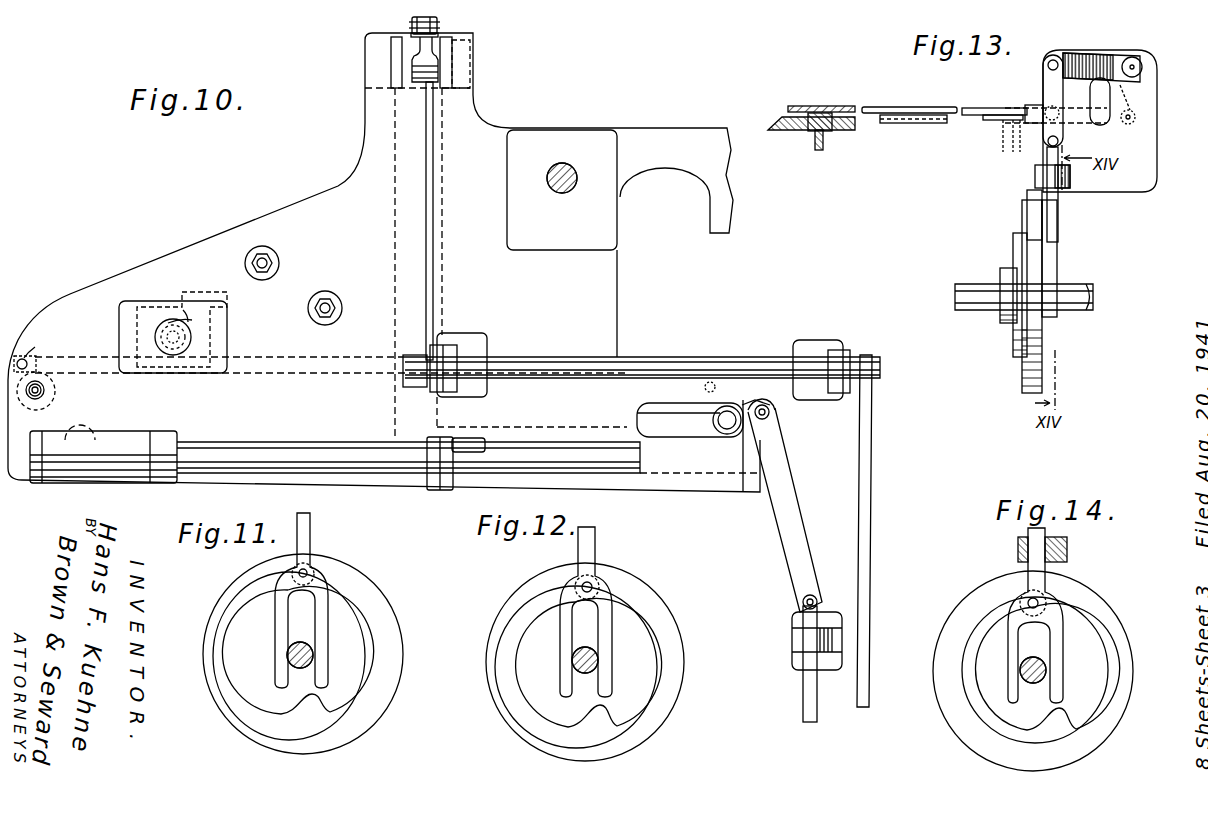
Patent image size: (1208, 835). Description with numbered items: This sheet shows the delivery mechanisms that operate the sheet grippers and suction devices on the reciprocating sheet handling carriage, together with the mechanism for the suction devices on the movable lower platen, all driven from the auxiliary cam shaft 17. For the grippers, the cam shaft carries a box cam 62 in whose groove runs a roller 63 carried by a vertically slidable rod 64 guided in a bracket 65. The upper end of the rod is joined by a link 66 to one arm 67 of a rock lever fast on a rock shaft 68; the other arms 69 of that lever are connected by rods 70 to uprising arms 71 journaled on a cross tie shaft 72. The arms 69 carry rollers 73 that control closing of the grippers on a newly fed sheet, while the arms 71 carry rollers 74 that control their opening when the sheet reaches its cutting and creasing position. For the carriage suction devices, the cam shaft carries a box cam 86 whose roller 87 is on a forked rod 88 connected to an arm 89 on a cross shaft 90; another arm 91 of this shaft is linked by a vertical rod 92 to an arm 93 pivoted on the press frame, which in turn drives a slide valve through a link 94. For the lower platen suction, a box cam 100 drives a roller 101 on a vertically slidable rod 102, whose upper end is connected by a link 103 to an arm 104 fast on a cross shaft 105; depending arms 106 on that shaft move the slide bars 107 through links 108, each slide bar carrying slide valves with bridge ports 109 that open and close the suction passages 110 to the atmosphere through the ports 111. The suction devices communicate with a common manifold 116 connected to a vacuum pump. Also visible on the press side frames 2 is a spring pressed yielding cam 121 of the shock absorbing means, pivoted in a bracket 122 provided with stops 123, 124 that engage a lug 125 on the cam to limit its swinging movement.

In FIG. 10, the press side frame 2 is at (562, 243).
In FIG. 11, the auxiliary cam shaft 17 is at (290, 653).
In FIG. 12, the auxiliary cam shaft 17 is at (575, 662).
In FIG. 14, the auxiliary cam shaft 17 is at (1020, 672).
In FIG. 13, the auxiliary cam shaft 17 is at (1093, 300).
In FIG. 11, the box cam 62 is at (312, 718).
In FIG. 11, the roller 63 is at (312, 574).
In FIG. 10, the vertically slidable rod 64 is at (808, 708).
In FIG. 11, the vertically slidable rod 64 is at (298, 543).
In FIG. 10, the bracket 65 is at (800, 616).
In FIG. 10, the link 66 is at (795, 548).
In FIG. 10, the rock lever arm 67 is at (774, 417).
In FIG. 10, the rock shaft 68 is at (722, 428).
In FIG. 10, the rock lever arms 69 is at (726, 387).
In FIG. 10, the rod 70 is at (290, 375).
In FIG. 10, the uprising arm 71 is at (32, 372).
In FIG. 10, the cross tie shaft 72 is at (46, 392).
In FIG. 10, the roller 73 is at (710, 382).
In FIG. 10, the roller 74 is at (41, 339).
In FIG. 12, the box cam 86 is at (612, 720).
In FIG. 12, the roller 87 is at (596, 585).
In FIG. 10, the forked rod 88 is at (870, 568).
In FIG. 12, the forked rod 88 is at (584, 551).
In FIG. 10, the arm 89 is at (858, 362).
In FIG. 10, the cross shaft 90 is at (577, 360).
In FIG. 10, the arm 91 is at (405, 360).
In FIG. 10, the vertical rod 92 is at (433, 278).
In FIG. 10, the arm 93 is at (418, 52).
In FIG. 10, the link 94 is at (438, 30).
In FIG. 14, the box cam 100 is at (992, 600).
In FIG. 13, the box cam 100 is at (1022, 385).
In FIG. 14, the roller 101 is at (1040, 600).
In FIG. 14, the vertically slidable rod 102 is at (1046, 531).
In FIG. 13, the vertically slidable rod 102 is at (1050, 158).
In FIG. 13, the link 103 is at (1063, 136).
In FIG. 13, the arm 104 is at (1068, 56).
In FIG. 13, the cross shaft 105 is at (1133, 58).
In FIG. 13, the depending arm 106 is at (1143, 97).
In FIG. 13, the slide bar 107 is at (925, 108).
In FIG. 13, the link 108 is at (1110, 123).
In FIG. 13, the bridge port 109 is at (840, 102).
In FIG. 13, the suction passage 110 is at (823, 150).
In FIG. 13, the port 111 is at (812, 130).
In FIG. 10, the common manifold 116 is at (363, 242).
In FIG. 10, the spring pressed yielding cam 121 is at (186, 300).
In FIG. 10, the bracket 122 is at (191, 337).
In FIG. 10, the stop 123 is at (192, 314).
In FIG. 10, the stop 124 is at (150, 311).
In FIG. 10, the lug 125 is at (182, 308).